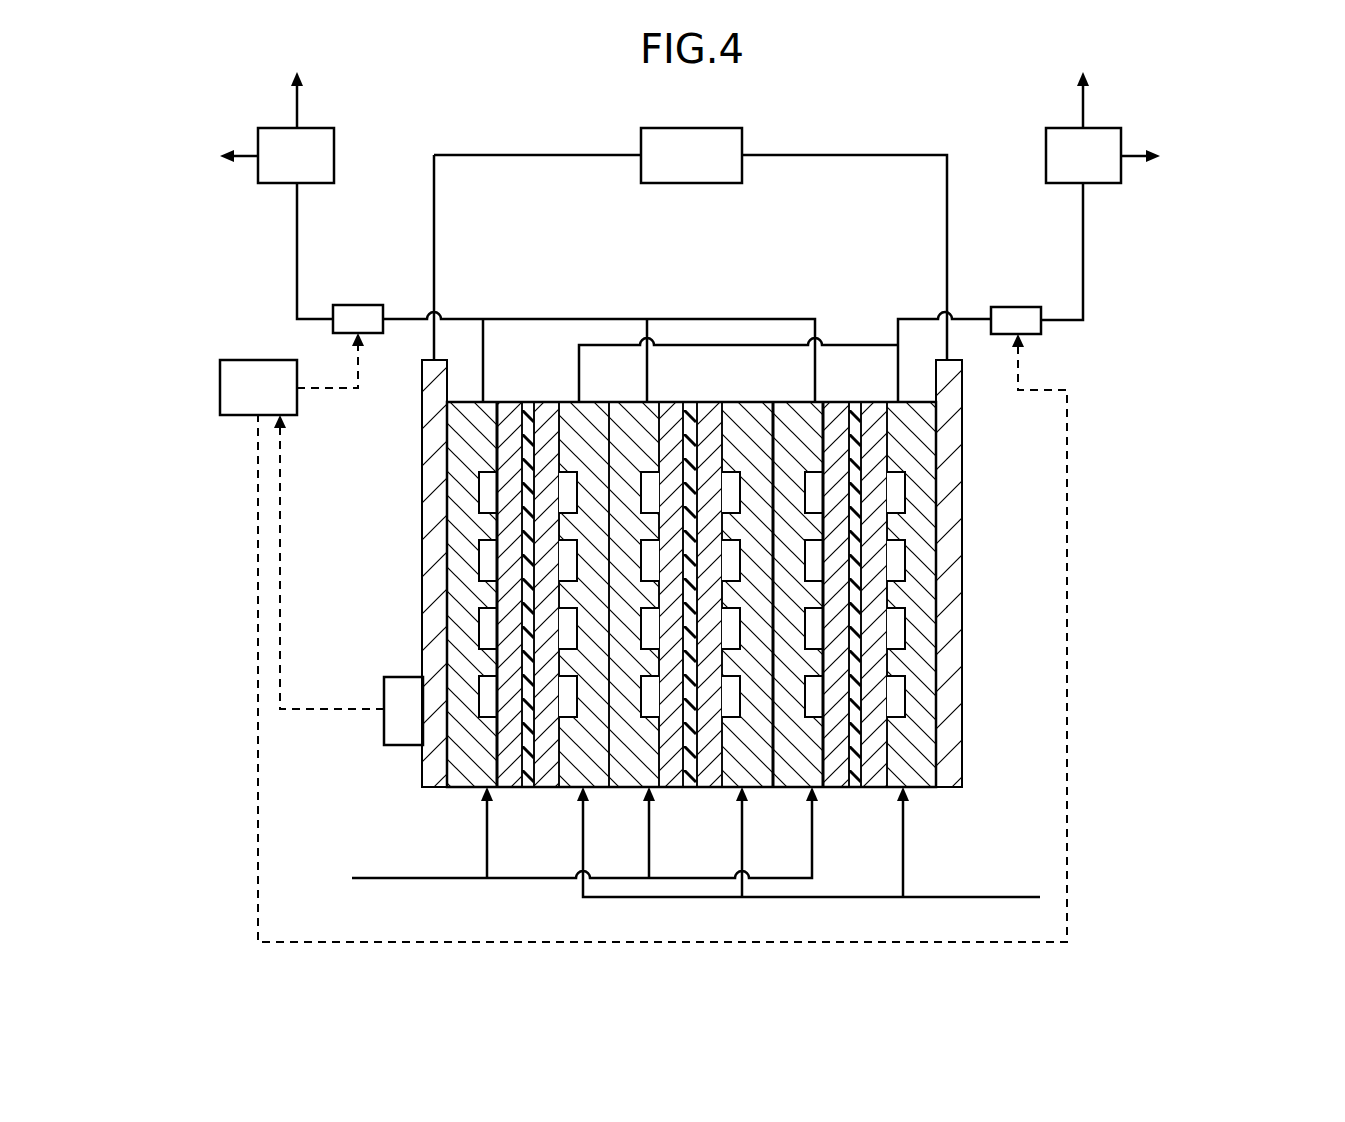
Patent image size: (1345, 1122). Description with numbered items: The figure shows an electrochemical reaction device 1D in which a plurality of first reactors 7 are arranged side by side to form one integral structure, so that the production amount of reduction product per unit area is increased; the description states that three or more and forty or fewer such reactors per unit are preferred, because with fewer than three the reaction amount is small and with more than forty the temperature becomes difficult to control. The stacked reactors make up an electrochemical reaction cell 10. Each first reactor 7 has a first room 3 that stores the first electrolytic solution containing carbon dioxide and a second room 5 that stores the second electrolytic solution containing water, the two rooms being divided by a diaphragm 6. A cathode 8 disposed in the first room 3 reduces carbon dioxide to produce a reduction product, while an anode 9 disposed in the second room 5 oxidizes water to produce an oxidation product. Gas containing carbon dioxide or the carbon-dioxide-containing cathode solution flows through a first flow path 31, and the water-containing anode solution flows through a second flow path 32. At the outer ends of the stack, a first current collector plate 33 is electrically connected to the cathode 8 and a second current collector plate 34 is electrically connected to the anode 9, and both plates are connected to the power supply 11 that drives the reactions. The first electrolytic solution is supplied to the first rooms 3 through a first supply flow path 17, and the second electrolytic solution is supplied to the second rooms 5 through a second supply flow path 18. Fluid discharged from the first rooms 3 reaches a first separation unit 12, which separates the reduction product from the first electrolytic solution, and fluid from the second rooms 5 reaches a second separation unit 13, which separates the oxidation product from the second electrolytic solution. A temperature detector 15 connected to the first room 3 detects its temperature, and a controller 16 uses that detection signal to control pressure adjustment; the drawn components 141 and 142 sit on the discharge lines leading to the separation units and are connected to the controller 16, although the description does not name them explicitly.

The electrochemical reaction device 1D is at (962, 94).
The first room 3 is at (694, 594).
The second room 5 is at (726, 594).
The diaphragm 6 is at (690, 428).
The first reactor 7 is at (770, 709).
The cathode 8 is at (673, 526).
The anode 9 is at (707, 523).
The electrochemical reaction cell 10 is at (694, 810).
The power supply 11 is at (668, 128).
The first separation unit 12 is at (268, 128).
The second separation unit 13 is at (1110, 128).
The temperature detector 15 is at (385, 688).
The controller 16 is at (220, 388).
The first supply flow path 17 is at (400, 878).
The second supply flow path 18 is at (960, 897).
The first flow path 31 is at (652, 628).
The second flow path 32 is at (732, 628).
The first current collector plate 33 is at (437, 769).
The second current collector plate 34 is at (947, 768).
The cathode flow rate control valve 141 is at (375, 334).
The anode flow rate control valve 142 is at (1035, 335).